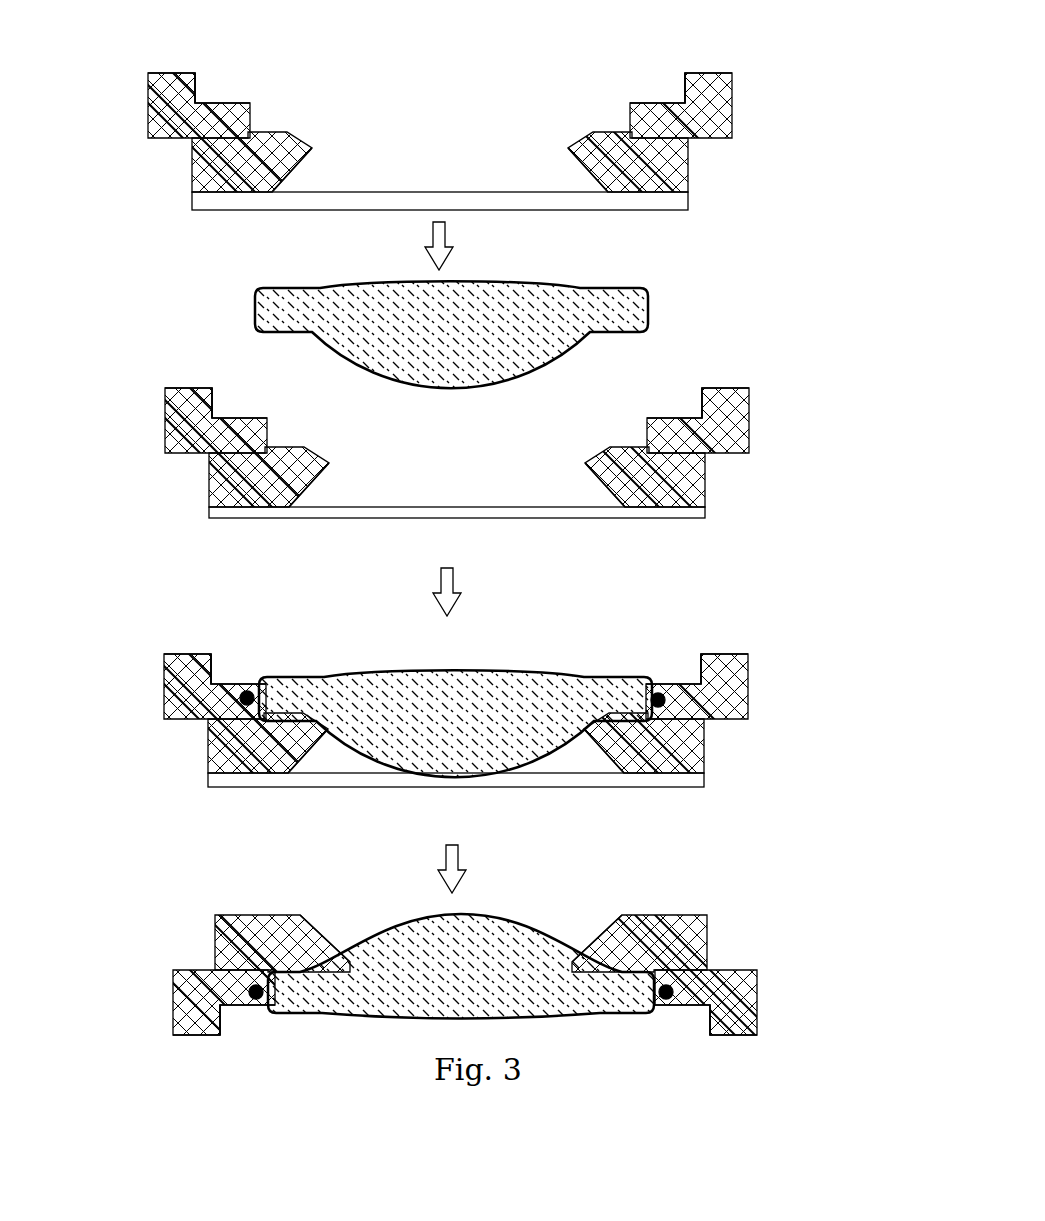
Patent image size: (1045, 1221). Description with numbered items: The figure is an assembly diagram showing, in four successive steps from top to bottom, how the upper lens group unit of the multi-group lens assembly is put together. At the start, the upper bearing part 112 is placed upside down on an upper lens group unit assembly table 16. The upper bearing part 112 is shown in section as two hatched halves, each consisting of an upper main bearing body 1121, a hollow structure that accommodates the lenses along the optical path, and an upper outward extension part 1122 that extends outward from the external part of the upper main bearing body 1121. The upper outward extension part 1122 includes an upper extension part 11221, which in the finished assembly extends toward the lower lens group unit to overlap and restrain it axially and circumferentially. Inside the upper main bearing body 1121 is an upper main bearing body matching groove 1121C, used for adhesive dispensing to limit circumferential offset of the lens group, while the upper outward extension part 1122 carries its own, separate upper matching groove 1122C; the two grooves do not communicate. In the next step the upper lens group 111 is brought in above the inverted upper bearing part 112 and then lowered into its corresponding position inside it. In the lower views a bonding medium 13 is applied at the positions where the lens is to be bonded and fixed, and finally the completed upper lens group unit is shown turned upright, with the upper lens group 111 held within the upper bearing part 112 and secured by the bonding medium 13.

The upper lens group 111 is at (652, 300).
The upper bearing part 112 is at (485, 543).
The upper main bearing body 1121 is at (444, 503).
The upper main bearing body matching groove 1121C is at (150, 78).
The upper outward extension part 1122 is at (473, 525).
The upper matching groove 1122C is at (215, 98).
The upper extension part 11221 is at (707, 74).
The bonding medium 13 is at (243, 696).
The upper lens group unit assembly table 16 is at (192, 203).